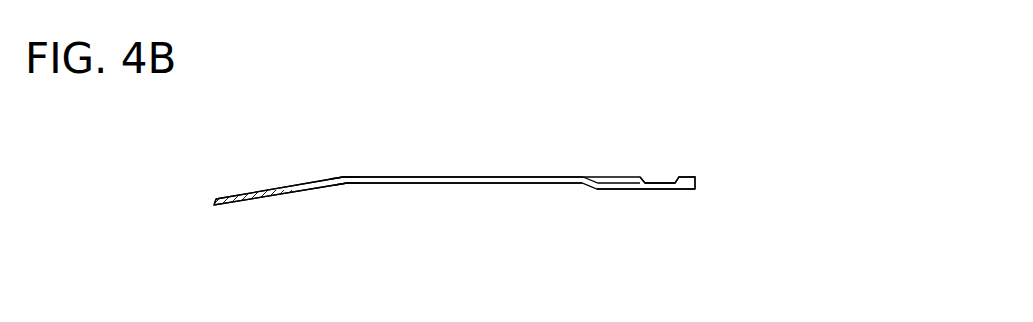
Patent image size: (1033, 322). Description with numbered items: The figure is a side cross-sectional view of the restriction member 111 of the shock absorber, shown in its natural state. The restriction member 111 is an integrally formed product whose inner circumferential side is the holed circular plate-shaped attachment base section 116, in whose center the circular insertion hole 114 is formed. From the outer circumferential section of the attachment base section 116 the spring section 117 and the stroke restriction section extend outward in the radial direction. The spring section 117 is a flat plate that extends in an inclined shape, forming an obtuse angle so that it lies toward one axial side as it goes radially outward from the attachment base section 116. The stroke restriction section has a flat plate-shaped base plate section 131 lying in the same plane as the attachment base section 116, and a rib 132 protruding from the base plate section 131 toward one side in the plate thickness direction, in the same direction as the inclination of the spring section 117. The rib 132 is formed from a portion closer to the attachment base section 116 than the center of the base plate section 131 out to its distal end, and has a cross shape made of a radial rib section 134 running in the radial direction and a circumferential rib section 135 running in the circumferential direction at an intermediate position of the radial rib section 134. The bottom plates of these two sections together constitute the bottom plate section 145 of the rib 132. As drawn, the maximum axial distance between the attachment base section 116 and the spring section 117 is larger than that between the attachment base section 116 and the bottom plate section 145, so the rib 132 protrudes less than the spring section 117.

The restriction member 111 is at (716, 158).
The circular insertion hole 114 is at (420, 183).
The attachment base section 116 is at (377, 175).
The spring section 117 is at (250, 193).
The base plate section 131 is at (632, 177).
The rib 132 is at (643, 207).
The radial rib section 134 is at (615, 177).
The circumferential rib section 135 is at (662, 183).
The bottom plate section 145 is at (657, 192).